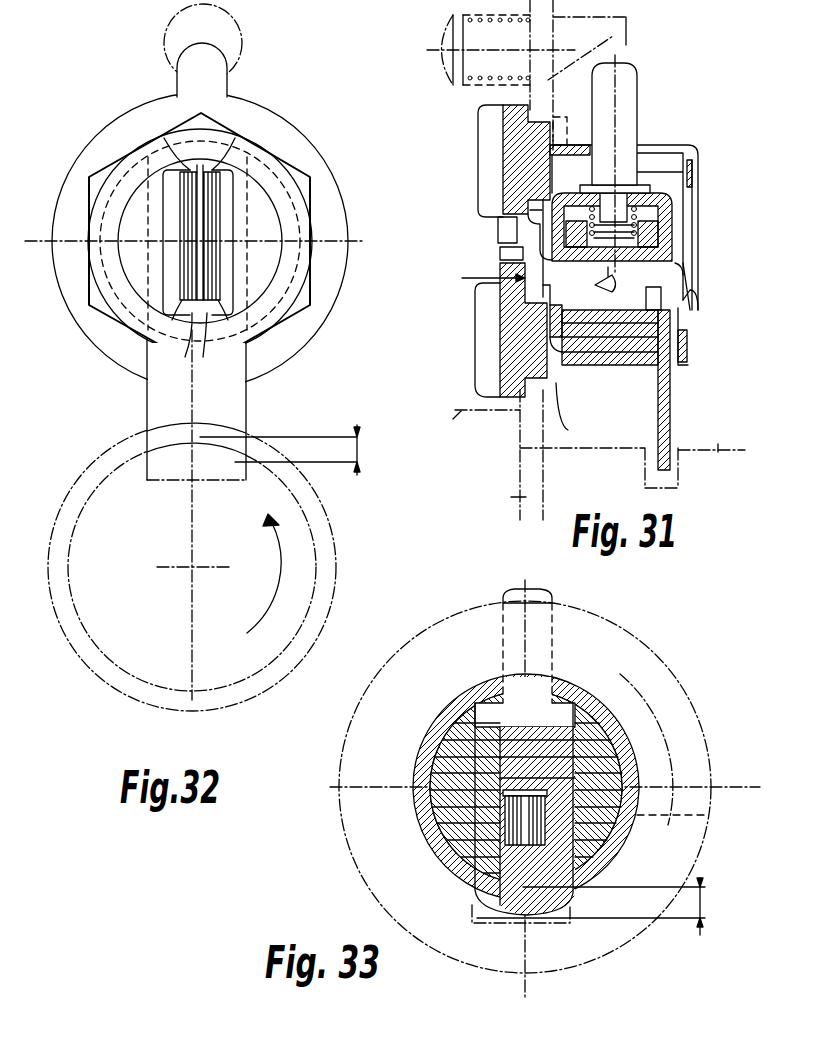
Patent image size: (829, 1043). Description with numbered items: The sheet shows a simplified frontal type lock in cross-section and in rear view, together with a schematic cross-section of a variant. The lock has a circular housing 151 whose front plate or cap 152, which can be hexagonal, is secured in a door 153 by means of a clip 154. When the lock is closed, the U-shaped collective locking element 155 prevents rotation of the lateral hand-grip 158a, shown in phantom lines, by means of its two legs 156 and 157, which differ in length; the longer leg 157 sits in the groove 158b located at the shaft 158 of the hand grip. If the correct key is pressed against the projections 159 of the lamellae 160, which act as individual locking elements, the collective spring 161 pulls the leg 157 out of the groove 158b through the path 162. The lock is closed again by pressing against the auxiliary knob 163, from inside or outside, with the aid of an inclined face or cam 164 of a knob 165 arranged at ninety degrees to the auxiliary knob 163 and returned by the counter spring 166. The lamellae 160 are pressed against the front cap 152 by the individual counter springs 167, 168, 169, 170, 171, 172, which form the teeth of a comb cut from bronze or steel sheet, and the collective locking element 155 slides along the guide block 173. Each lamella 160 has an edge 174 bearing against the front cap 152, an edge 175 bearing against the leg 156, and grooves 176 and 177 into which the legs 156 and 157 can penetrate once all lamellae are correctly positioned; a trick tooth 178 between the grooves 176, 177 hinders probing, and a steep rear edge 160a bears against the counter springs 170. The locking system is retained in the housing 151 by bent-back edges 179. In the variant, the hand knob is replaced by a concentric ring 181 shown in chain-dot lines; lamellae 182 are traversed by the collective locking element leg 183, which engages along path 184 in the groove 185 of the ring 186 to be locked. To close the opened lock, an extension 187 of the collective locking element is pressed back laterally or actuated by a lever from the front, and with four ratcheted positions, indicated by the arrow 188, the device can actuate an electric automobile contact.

In FIG. 31, the circular housing 151 is at (598, 362).
In FIG. 31, the front plate or cap 152 is at (505, 372).
In FIG. 31, the door 153 is at (510, 455).
In FIG. 31, the clip 154 is at (577, 413).
In FIG. 31, the U-shaped collective locking element 155 is at (658, 199).
In FIG. 31, the leg 156 is at (548, 322).
In FIG. 31, the leg 157 is at (665, 387).
In FIG. 32, the shaft 158 is at (308, 567).
In FIG. 31, the shaft 158 is at (632, 454).
In FIG. 31, the hand-grip 158a is at (482, 427).
In FIG. 32, the groove 158b is at (175, 472).
In FIG. 31, the groove 158b is at (674, 477).
In FIG. 31, the projections 159 is at (513, 257).
In FIG. 31, the lamellae 160 is at (587, 278).
In FIG. 31, the steep rear edge 160a is at (686, 282).
In FIG. 31, the collective spring 161 is at (630, 215).
In FIG. 32, the path 162 is at (268, 449).
In FIG. 31, the auxiliary knob 163 is at (637, 91).
In FIG. 31, the inclined face or cam 164 is at (617, 38).
In FIG. 31, the knob 165 is at (442, 62).
In FIG. 31, the counter spring 166 is at (478, 84).
In FIG. 32, the individual counter spring 167 is at (172, 322).
In FIG. 32, the individual counter spring 168 is at (163, 138).
In FIG. 32, the individual counter spring 169 is at (176, 344).
In FIG. 32, the individual counter spring 170 is at (218, 344).
In FIG. 31, the individual counter spring 170 is at (683, 253).
In FIG. 32, the individual counter spring 171 is at (238, 139).
In FIG. 32, the individual counter spring 172 is at (228, 322).
In FIG. 31, the guide block 173 is at (618, 334).
In FIG. 31, the edge 174 is at (481, 277).
In FIG. 31, the edge 175 is at (510, 233).
In FIG. 31, the groove 176 is at (547, 291).
In FIG. 31, the groove 177 is at (654, 300).
In FIG. 31, the trick tooth 178 is at (573, 321).
In FIG. 31, the edges 179 is at (692, 340).
In FIG. 33, the concentric ring 181 is at (443, 623).
In FIG. 33, the lamellae 182 is at (555, 846).
In FIG. 33, the collective locking element leg 183 is at (525, 910).
In FIG. 33, the path 184 is at (692, 913).
In FIG. 33, the groove 185 is at (470, 920).
In FIG. 33, the ring 186 is at (493, 973).
In FIG. 33, the extension 187 is at (520, 590).
In FIG. 33, the arrow 188 is at (612, 672).